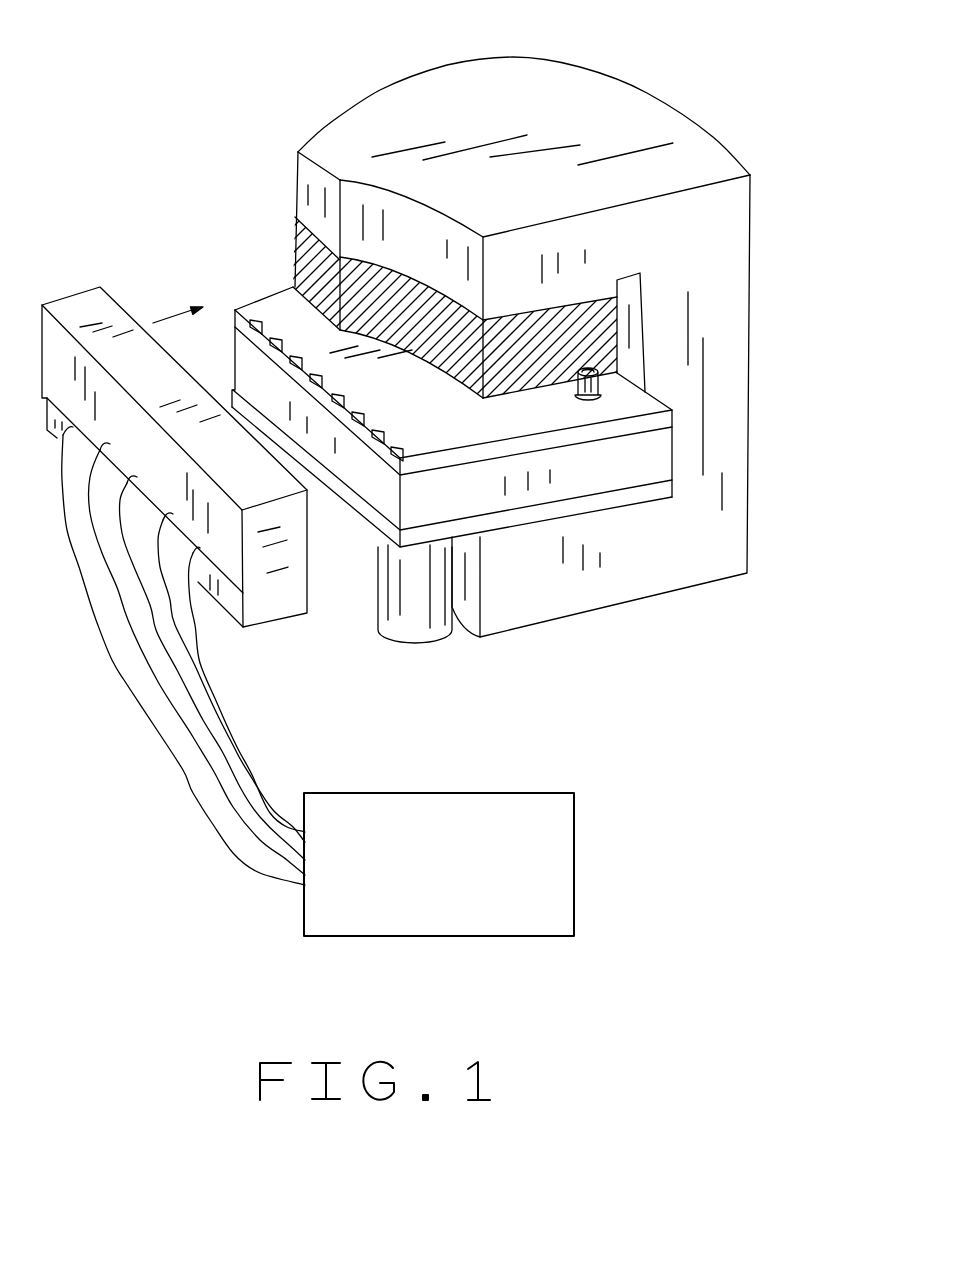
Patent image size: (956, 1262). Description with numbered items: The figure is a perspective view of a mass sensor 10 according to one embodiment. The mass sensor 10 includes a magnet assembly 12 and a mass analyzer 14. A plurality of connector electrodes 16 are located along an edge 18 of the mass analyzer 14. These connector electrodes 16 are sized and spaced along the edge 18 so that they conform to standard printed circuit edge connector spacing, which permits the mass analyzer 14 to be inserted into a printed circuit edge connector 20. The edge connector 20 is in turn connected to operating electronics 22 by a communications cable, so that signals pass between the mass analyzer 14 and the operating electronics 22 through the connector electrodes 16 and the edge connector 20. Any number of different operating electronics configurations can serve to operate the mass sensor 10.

The mass sensor 10 is at (306, 87).
The magnet assembly 12 is at (597, 50).
The mass analyzer 14 is at (263, 297).
The connector electrodes 16 is at (347, 393).
The edge 18 is at (225, 302).
The printed circuit edge connector 20 is at (73, 290).
The operating electronics 22 is at (574, 857).